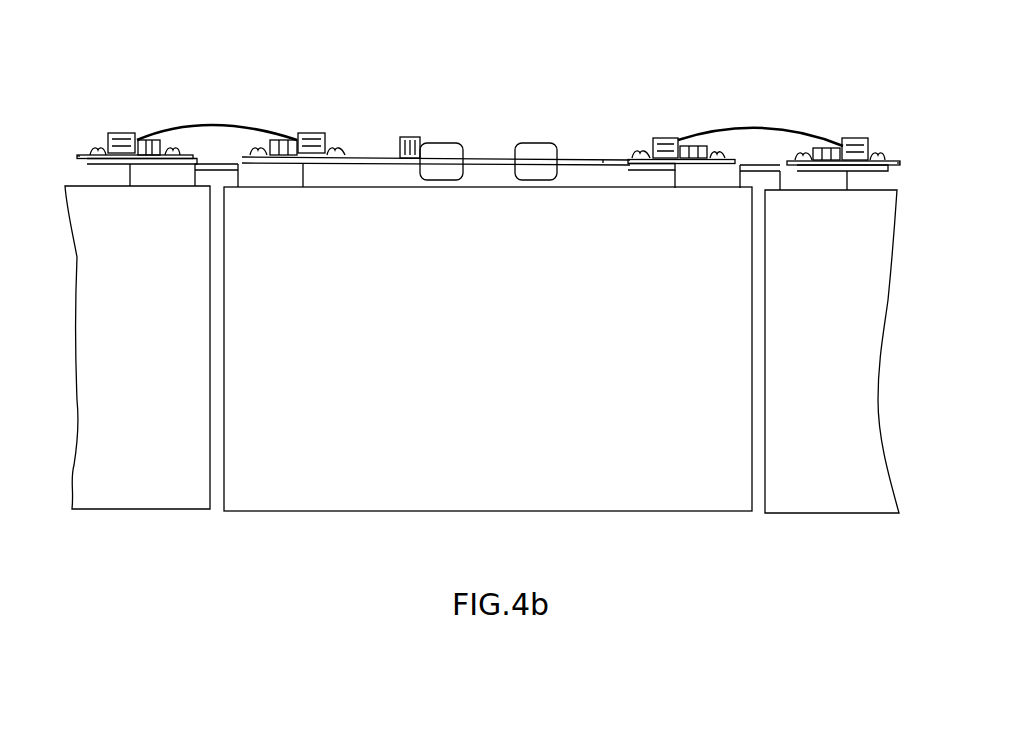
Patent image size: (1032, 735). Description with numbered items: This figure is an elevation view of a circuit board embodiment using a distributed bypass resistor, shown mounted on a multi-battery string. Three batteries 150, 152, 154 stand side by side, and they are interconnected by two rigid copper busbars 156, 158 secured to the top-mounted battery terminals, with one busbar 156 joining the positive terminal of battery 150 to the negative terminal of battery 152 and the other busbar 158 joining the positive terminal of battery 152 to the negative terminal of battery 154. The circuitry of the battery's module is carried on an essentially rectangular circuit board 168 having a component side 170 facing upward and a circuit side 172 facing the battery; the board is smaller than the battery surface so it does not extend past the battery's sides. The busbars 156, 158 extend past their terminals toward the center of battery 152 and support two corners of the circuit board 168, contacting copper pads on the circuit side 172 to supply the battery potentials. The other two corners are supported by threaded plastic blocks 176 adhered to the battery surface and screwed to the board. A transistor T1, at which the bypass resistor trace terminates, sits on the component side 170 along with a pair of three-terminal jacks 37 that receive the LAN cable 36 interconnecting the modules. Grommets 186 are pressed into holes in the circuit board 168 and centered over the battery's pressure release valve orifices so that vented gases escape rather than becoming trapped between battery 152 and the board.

The battery 150 is at (147, 512).
The battery 152 is at (440, 512).
The battery 154 is at (812, 515).
The rigid copper busbar 156 is at (87, 163).
The rigid copper busbar 158 is at (883, 177).
The circuit board 168 is at (365, 157).
The component side 170 is at (603, 160).
The circuit side 172 is at (598, 158).
The threaded plastic block 176 is at (155, 173).
The three-terminal jack 37 is at (313, 135).
The LAN cable 36 is at (207, 123).
The transistor T1 is at (412, 134).
The grommet 186 is at (520, 155).